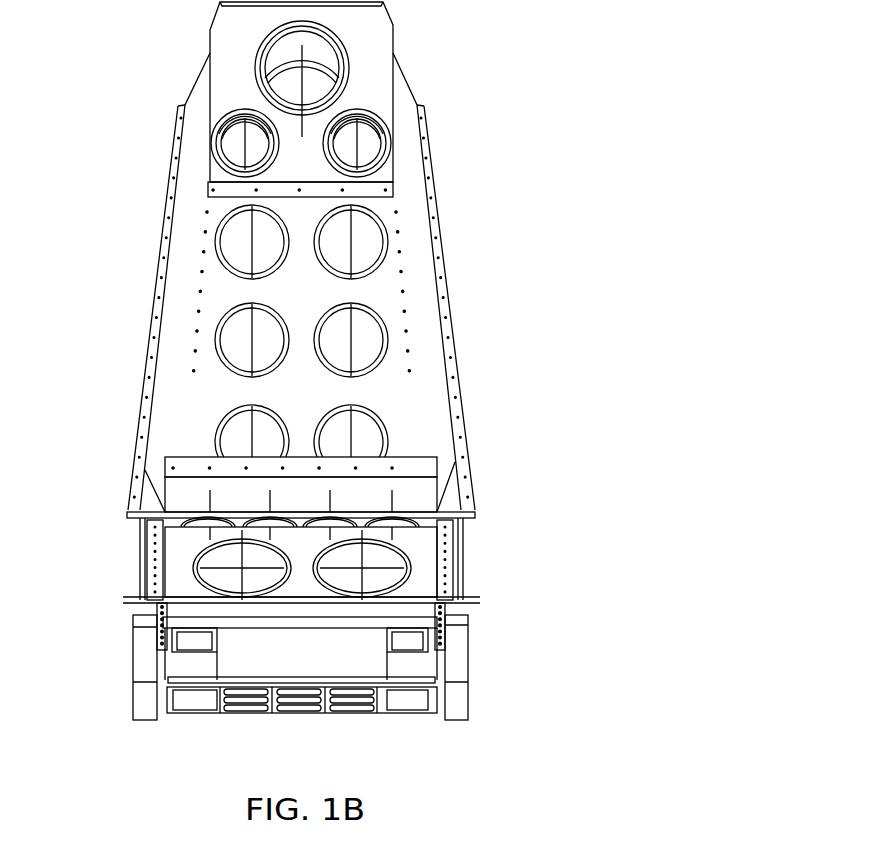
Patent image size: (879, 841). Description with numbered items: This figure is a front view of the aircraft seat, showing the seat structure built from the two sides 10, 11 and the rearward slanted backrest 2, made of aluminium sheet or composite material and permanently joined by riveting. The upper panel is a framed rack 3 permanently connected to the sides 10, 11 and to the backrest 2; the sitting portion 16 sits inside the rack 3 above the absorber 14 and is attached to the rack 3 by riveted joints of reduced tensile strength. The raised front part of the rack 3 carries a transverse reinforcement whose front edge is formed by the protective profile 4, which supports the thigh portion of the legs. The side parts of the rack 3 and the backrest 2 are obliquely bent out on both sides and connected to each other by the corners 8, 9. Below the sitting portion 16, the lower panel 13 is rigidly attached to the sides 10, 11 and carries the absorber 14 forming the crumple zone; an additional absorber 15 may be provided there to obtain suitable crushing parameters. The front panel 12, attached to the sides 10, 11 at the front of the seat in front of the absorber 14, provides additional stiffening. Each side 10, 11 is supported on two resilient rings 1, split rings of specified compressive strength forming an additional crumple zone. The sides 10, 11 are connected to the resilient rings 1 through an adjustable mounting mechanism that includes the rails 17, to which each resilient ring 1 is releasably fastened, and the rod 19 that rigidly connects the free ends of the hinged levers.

The resilient ring 1 is at (462, 663).
The backrest 2 is at (402, 93).
The rack 3 is at (403, 488).
The protective profile 4 is at (392, 457).
The corner 8 is at (150, 497).
The corner 9 is at (450, 500).
The side 10 is at (472, 588).
The side 11 is at (150, 577).
The front panel 12 is at (418, 555).
The lower panel 13 is at (380, 713).
The absorber 14 is at (217, 577).
The additional absorber 15 is at (240, 660).
The sitting portion 16 is at (229, 556).
The rail 17 is at (468, 617).
The rod 19 is at (417, 593).